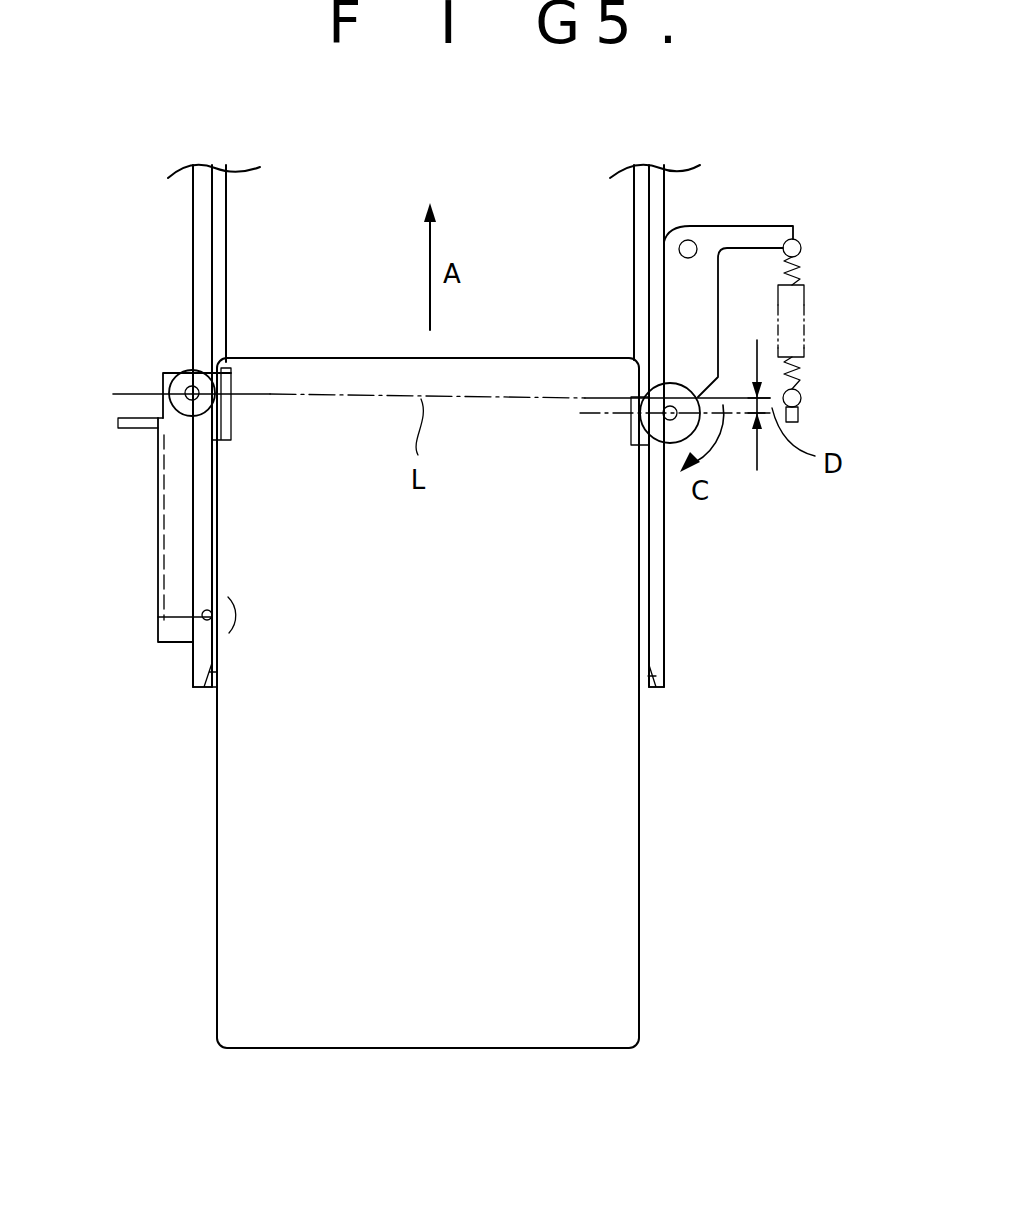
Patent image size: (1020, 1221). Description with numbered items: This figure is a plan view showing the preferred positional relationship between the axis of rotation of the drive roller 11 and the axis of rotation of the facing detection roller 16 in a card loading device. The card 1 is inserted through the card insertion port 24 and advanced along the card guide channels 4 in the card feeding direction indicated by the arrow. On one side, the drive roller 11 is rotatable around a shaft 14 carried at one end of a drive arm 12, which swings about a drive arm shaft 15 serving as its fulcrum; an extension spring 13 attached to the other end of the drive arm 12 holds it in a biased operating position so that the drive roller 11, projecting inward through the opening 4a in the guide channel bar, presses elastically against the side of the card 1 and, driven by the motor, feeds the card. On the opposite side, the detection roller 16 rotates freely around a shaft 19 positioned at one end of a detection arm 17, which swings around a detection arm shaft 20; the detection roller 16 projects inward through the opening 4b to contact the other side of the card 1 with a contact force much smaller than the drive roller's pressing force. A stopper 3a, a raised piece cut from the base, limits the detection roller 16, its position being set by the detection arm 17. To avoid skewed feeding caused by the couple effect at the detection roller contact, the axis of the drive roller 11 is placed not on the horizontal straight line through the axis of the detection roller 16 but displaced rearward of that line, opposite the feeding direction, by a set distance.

The card 1 is at (650, 907).
The stopper 3a is at (128, 432).
The card guide channel 4 is at (190, 670).
The opening 4a is at (630, 378).
The opening 4b is at (236, 372).
The drive roller 11 is at (675, 380).
The drive arm 12 is at (794, 226).
The extension spring 13 is at (805, 346).
The shaft 14 is at (712, 428).
The drive arm shaft 15 is at (697, 238).
The detection roller 16 is at (165, 373).
The detection arm 17 is at (157, 565).
The shaft 19 is at (182, 378).
The detection arm shaft 20 is at (200, 618).
The card insertion port 24 is at (208, 688).